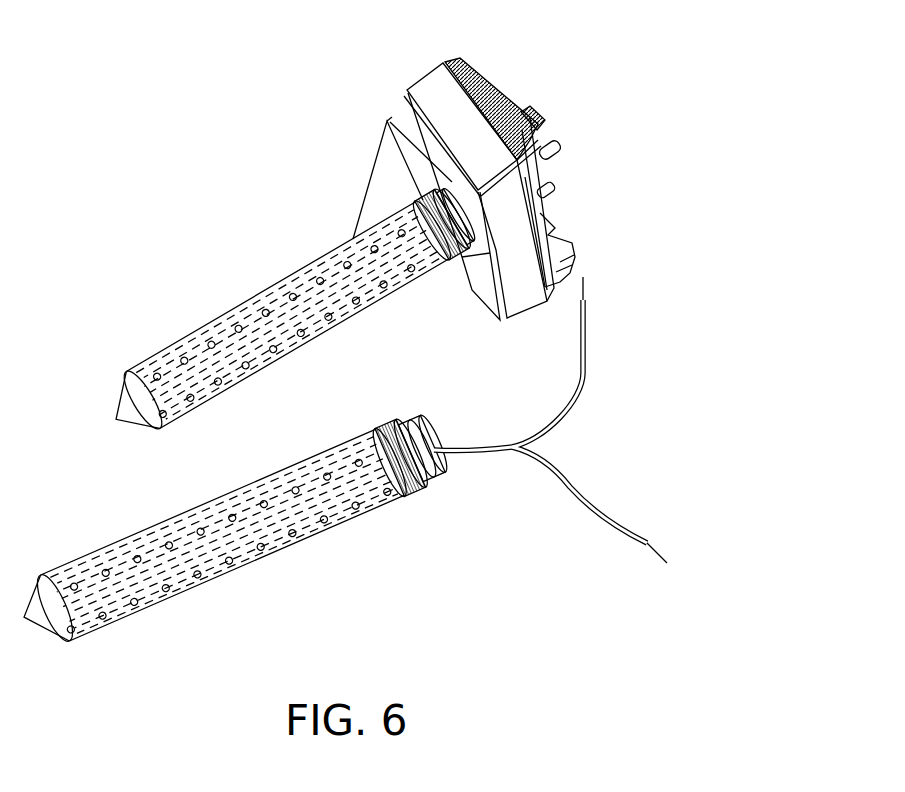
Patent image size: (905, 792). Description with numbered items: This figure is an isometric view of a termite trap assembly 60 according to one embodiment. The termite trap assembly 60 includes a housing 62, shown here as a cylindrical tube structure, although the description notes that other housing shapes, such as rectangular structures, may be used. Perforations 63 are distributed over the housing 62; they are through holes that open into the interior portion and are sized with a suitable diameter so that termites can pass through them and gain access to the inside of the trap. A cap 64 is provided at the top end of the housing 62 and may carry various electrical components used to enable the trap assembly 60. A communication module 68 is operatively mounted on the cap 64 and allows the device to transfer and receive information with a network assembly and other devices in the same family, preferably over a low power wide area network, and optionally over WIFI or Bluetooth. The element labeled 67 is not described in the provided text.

The termite trap assembly 60 is at (258, 288).
The housing 62 is at (187, 592).
The perforations 63 is at (298, 540).
The cap 64 is at (390, 128).
The cover plate 67 is at (428, 70).
The communication module 68 is at (546, 122).